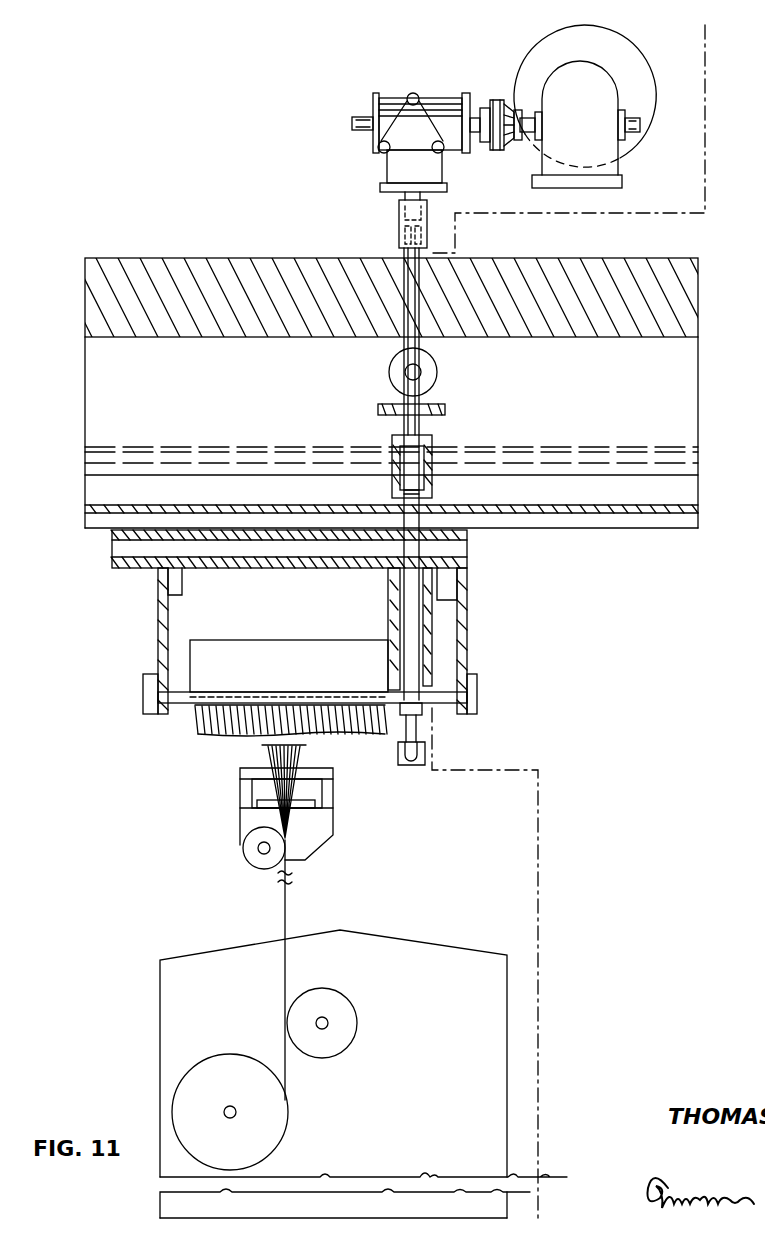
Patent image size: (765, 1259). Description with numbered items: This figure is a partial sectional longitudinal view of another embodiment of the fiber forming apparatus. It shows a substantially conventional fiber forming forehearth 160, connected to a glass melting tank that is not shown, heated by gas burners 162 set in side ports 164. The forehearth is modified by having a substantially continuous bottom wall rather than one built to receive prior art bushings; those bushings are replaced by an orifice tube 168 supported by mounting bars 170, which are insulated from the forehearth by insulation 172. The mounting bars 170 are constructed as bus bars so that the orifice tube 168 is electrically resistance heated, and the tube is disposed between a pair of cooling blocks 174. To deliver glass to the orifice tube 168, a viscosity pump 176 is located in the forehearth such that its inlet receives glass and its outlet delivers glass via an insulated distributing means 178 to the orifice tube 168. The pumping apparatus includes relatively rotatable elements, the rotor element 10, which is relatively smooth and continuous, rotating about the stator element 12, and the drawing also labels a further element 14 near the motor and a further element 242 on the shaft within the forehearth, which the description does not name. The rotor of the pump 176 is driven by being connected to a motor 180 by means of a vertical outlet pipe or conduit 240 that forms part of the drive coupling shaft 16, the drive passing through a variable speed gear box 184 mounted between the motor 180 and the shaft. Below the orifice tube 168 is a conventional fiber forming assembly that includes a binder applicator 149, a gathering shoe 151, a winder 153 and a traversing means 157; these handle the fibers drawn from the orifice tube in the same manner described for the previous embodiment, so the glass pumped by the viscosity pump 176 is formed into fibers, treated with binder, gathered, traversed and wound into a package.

The rotor element 10 is at (392, 487).
The stator element 12 is at (672, 25).
The drive motor 14 is at (517, 46).
The drive coupling shaft 16 is at (361, 194).
The binder applicator 149 is at (236, 822).
The gathering shoe 151 is at (250, 865).
The winder 153 is at (270, 1135).
The traversing means 157 is at (330, 1036).
The fiber forming forehearth 160 is at (590, 262).
The gas burners 162 is at (424, 376).
The side ports 164 is at (391, 374).
The orifice tube 168 is at (262, 692).
The mounting bars 170 is at (158, 627).
The insulation 172 is at (113, 550).
The cooling blocks 174 is at (143, 694).
The viscosity pump 176 is at (434, 448).
The insulated distributing means 178 is at (400, 610).
The motor 180 is at (646, 106).
The variable speed gear box 184 is at (487, 90).
The vertical outlet pipe or conduit 240 is at (400, 256).
The collar 242 is at (380, 410).